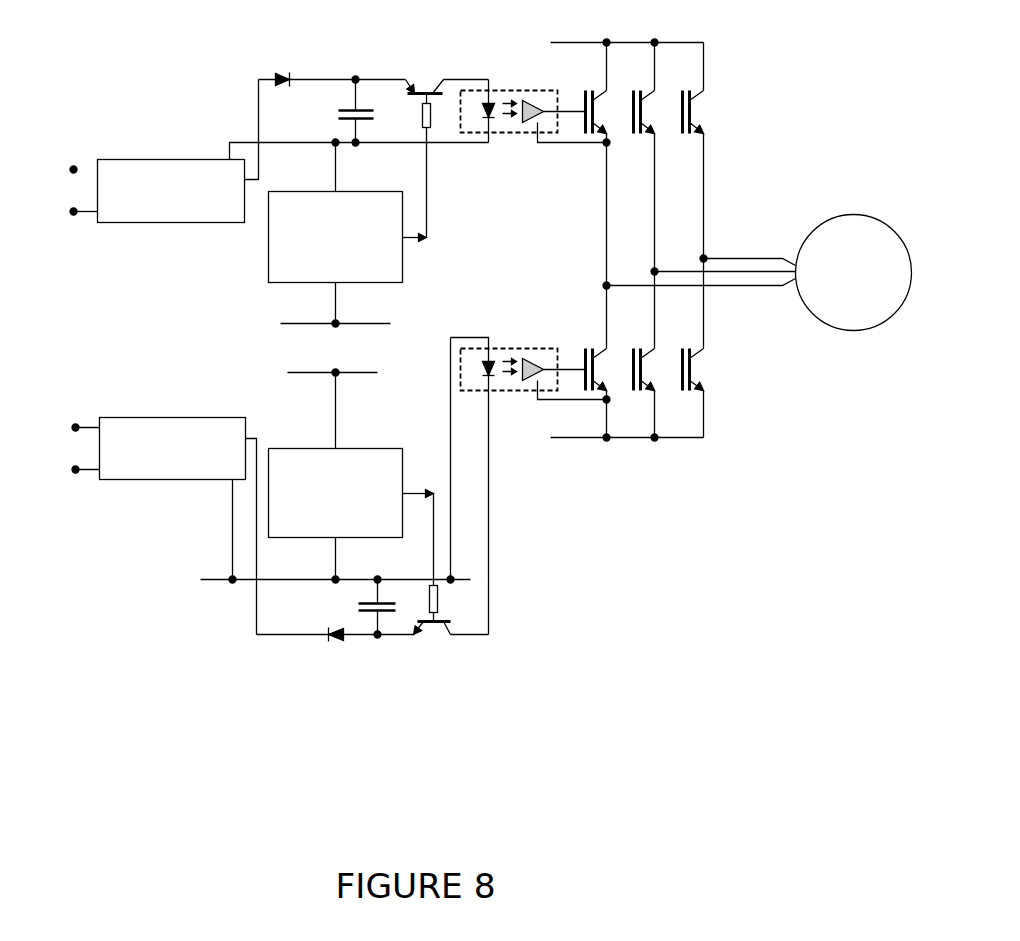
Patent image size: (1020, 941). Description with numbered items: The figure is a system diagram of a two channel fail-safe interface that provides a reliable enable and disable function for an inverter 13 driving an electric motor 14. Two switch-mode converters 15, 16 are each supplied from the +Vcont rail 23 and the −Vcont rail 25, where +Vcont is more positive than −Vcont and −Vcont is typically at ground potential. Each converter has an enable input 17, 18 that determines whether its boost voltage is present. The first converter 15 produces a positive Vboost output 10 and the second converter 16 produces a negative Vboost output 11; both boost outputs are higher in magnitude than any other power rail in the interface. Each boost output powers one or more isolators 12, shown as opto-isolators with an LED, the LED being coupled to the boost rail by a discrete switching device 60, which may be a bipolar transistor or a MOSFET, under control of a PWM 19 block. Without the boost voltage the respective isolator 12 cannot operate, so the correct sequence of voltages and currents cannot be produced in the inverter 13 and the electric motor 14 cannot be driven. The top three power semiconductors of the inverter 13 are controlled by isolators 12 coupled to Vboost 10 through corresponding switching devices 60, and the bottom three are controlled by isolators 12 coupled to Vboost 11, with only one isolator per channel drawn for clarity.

The Vboost output 10 is at (332, 64).
The Vboost output 11 is at (333, 652).
The isolator 12 is at (529, 347).
The inverter 13 is at (650, 241).
The electric motor 14 is at (759, 273).
The switch-mode converter 15 is at (178, 151).
The switch-mode converter 16 is at (178, 526).
The enable input 17 is at (63, 190).
The enable input 18 is at (56, 448).
The PWM 19 is at (351, 365).
The +Vcont rail 23 is at (359, 280).
The −Vcont rail 25 is at (317, 441).
The switching device 60 is at (444, 359).